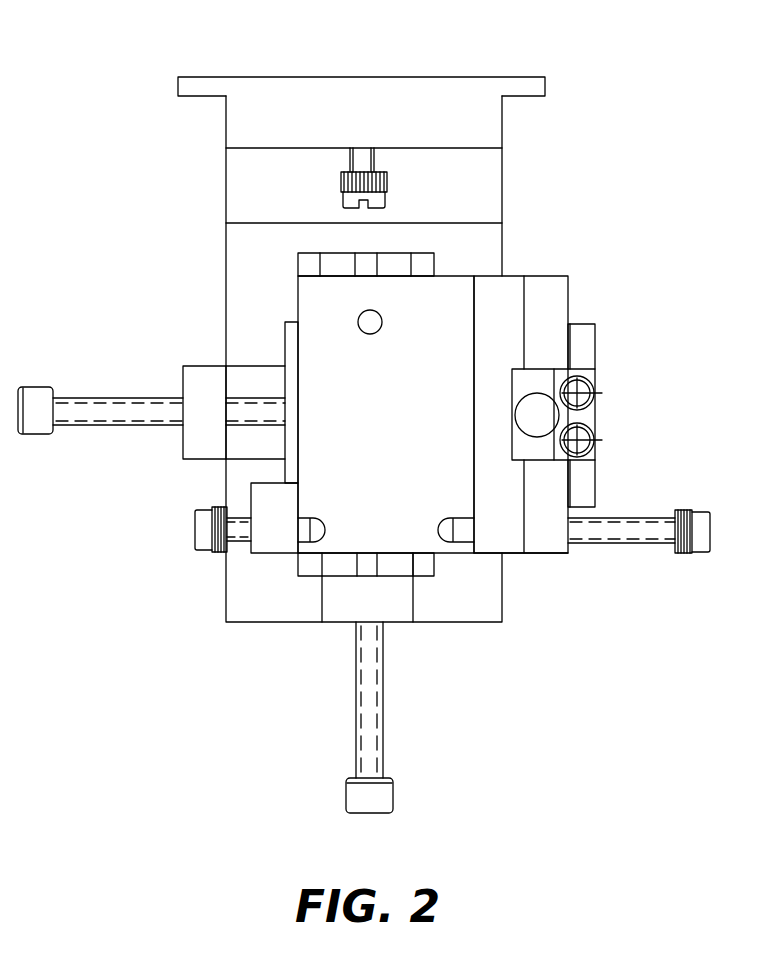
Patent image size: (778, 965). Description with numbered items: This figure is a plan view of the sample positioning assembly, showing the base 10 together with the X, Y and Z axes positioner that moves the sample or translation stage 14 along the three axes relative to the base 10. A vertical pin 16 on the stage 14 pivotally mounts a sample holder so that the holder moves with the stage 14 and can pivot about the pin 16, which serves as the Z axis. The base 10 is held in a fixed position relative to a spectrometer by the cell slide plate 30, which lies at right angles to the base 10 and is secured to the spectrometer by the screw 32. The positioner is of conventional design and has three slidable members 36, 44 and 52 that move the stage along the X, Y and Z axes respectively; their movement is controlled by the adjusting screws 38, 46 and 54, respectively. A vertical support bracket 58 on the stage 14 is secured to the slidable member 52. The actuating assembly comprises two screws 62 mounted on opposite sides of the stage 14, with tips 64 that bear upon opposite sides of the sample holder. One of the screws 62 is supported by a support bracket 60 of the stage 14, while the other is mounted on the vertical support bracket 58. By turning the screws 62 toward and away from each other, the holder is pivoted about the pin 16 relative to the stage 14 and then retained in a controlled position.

The base 10 is at (242, 276).
The translation stage 14 is at (452, 292).
The vertical pin 16 is at (360, 333).
The cell slide plate 30 is at (450, 93).
The screw 32 is at (352, 158).
The slidable member 36 is at (430, 567).
The adjusting screw 38 is at (35, 423).
The slidable member 44 is at (578, 337).
The adjusting screw 46 is at (383, 797).
The slidable member 52 is at (545, 276).
The adjusting screw 54 is at (530, 408).
The vertical support bracket 58 is at (510, 533).
The support bracket 60 is at (276, 540).
The screws 62 is at (200, 525).
The tips 64 is at (443, 513).